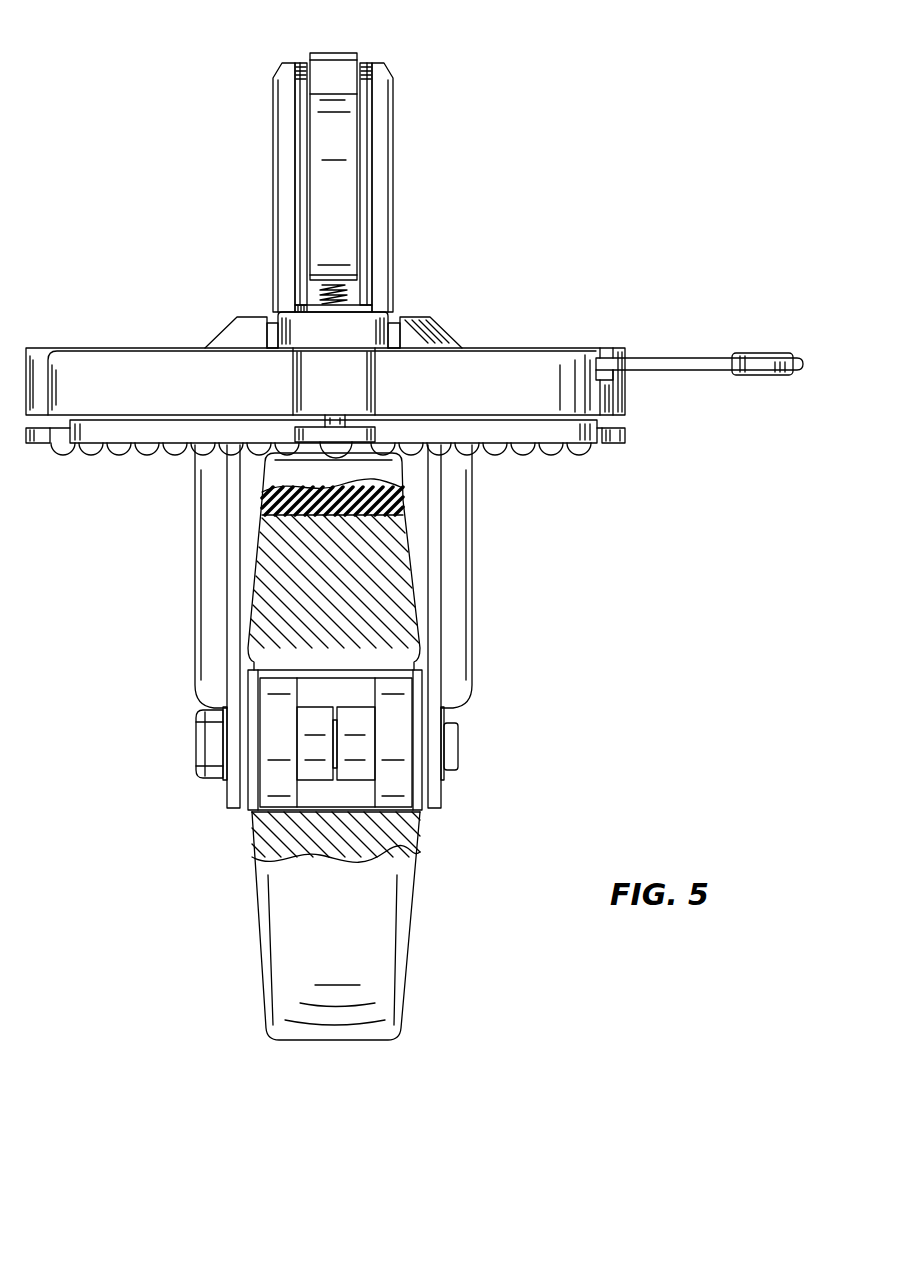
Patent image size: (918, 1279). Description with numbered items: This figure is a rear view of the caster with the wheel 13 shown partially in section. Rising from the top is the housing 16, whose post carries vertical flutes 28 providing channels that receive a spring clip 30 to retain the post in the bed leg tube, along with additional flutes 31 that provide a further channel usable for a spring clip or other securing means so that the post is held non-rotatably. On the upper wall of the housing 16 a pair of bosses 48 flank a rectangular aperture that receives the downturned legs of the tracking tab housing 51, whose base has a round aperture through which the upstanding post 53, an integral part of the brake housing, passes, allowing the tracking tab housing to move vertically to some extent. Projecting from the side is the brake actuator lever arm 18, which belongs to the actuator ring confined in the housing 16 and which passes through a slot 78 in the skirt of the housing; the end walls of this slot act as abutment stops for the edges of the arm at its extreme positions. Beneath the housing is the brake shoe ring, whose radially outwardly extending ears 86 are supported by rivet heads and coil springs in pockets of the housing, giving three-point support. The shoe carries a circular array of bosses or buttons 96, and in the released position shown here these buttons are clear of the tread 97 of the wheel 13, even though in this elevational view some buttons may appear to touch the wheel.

The wheel 13 is at (222, 876).
The housing 16 is at (108, 348).
The brake actuator lever arm 18 is at (703, 360).
The vertical flutes 28 is at (363, 122).
The spring clip 30 is at (327, 208).
The additional flutes 31 is at (283, 115).
The bosses 48 is at (270, 333).
The tracking tab housing 51 is at (365, 330).
The upstanding post 53 is at (333, 283).
The slot 78 is at (623, 375).
The ears 86 is at (37, 443).
The bosses or buttons 96 is at (497, 448).
The tread 97 is at (302, 1043).